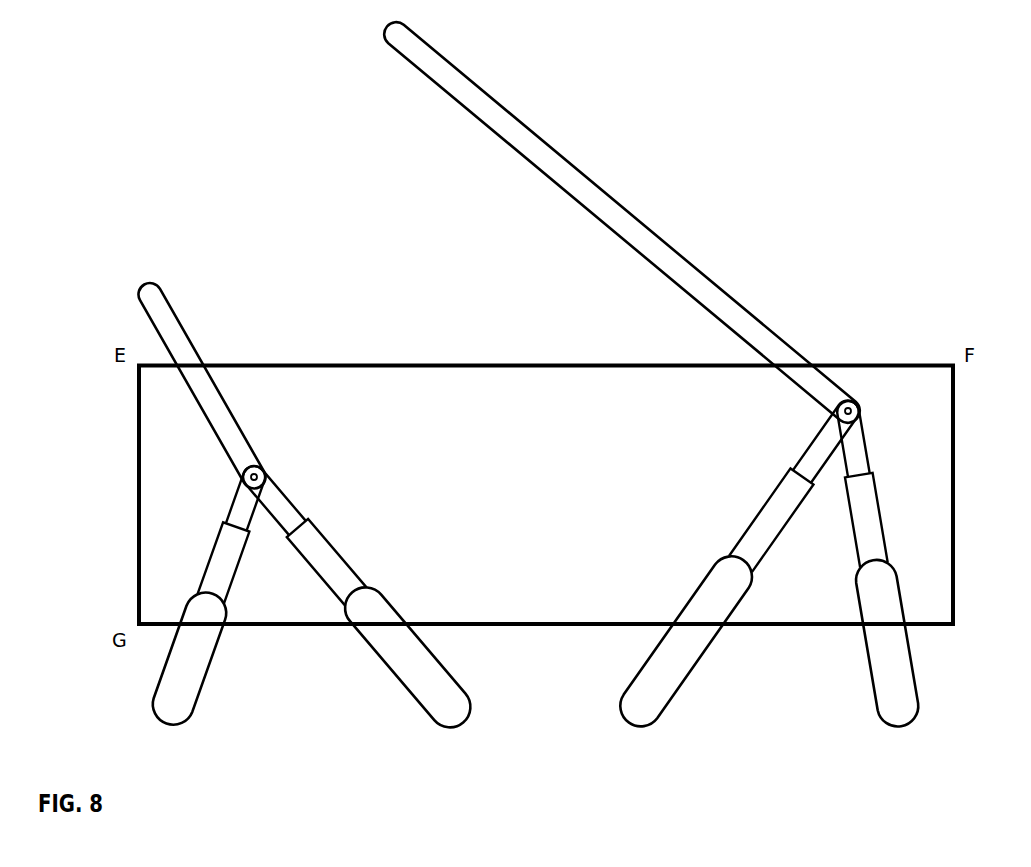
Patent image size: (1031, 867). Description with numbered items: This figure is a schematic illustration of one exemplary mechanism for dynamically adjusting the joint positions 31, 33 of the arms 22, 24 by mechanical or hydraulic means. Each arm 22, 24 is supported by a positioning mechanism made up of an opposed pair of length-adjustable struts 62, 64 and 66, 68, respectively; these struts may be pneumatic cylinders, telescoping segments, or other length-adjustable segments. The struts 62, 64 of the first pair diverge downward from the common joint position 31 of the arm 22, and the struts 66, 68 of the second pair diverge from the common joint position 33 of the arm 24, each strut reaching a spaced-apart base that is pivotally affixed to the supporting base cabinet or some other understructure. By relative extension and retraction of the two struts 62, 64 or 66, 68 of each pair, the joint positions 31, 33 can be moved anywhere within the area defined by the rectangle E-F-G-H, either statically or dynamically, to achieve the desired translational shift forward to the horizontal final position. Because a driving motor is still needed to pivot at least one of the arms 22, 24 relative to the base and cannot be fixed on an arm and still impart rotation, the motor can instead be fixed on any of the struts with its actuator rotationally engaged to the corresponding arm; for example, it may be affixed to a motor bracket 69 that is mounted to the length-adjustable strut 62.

The arm 22 is at (203, 383).
The arm 24 is at (668, 263).
The joint position 31 is at (263, 465).
The joint position 33 is at (840, 405).
The length-adjustable strut 62 is at (188, 660).
The length-adjustable strut 64 is at (405, 660).
The length-adjustable strut 66 is at (700, 598).
The length-adjustable strut 68 is at (883, 607).
The motor bracket 69 is at (225, 522).